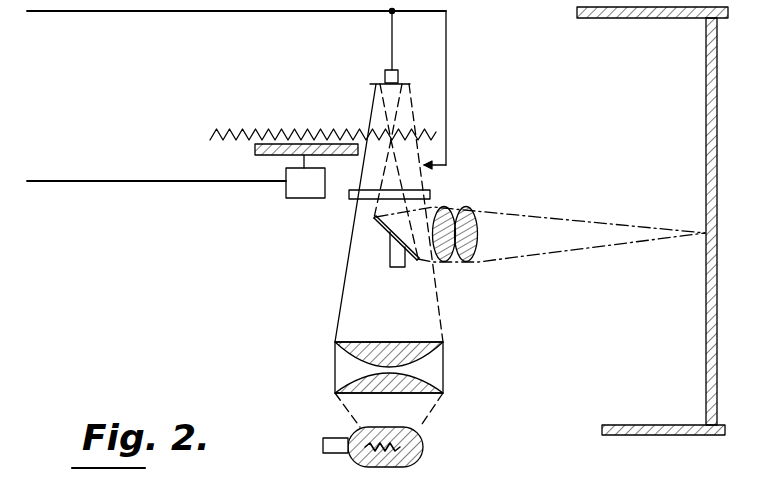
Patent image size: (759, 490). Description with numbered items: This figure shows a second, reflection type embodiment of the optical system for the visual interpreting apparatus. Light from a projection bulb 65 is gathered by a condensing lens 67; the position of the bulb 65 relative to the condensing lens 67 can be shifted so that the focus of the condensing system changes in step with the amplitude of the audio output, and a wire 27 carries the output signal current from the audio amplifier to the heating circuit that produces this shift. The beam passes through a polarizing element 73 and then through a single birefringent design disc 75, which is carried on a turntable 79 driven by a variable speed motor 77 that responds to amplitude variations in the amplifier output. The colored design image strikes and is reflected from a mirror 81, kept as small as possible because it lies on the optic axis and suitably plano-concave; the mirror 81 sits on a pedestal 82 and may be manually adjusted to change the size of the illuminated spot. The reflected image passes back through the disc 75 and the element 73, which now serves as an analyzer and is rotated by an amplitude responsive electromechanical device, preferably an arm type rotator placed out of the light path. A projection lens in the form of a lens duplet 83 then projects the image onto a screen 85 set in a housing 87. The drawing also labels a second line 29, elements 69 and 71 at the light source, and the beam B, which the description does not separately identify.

The wire 27 is at (230, 12).
The supply line / conductor 29 is at (75, 181).
The projection bulb 65 is at (423, 447).
The condensing lens 67 is at (443, 363).
The light source housing 69 is at (372, 86).
The light source element 71 is at (399, 75).
The polarizing element 73 is at (431, 194).
The birefringent design disc 75 is at (213, 134).
The variable speed motor 77 is at (301, 193).
The turntable 79 is at (258, 151).
The mirror 81 is at (383, 231).
The pedestal 82 is at (399, 267).
The lens duplet 83 is at (455, 262).
The screen 85 is at (706, 125).
The housing 87 is at (670, 392).
The light beam B is at (420, 411).